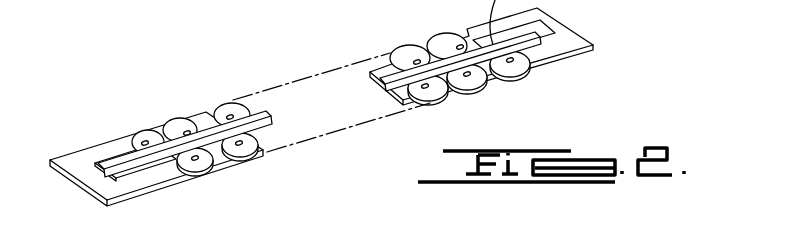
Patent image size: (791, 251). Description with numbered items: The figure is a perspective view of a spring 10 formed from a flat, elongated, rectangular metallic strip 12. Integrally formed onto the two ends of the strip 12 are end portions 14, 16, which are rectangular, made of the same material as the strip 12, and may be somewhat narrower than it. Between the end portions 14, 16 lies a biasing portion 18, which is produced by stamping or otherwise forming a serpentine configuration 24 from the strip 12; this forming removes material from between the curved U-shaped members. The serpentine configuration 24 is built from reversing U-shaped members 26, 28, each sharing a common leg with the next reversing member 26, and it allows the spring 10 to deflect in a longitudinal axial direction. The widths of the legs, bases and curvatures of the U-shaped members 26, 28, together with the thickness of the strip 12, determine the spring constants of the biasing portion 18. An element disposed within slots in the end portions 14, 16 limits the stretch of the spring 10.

The spring 10 is at (92, 116).
The strip 12 is at (188, 186).
The end portion 14 is at (83, 167).
The end portion 16 is at (578, 42).
The biasing portion 18 is at (373, 136).
The serpentine configuration 24 is at (409, 47).
The reversing U-shaped member 26 is at (247, 157).
The reversing U-shaped member 28 is at (208, 107).